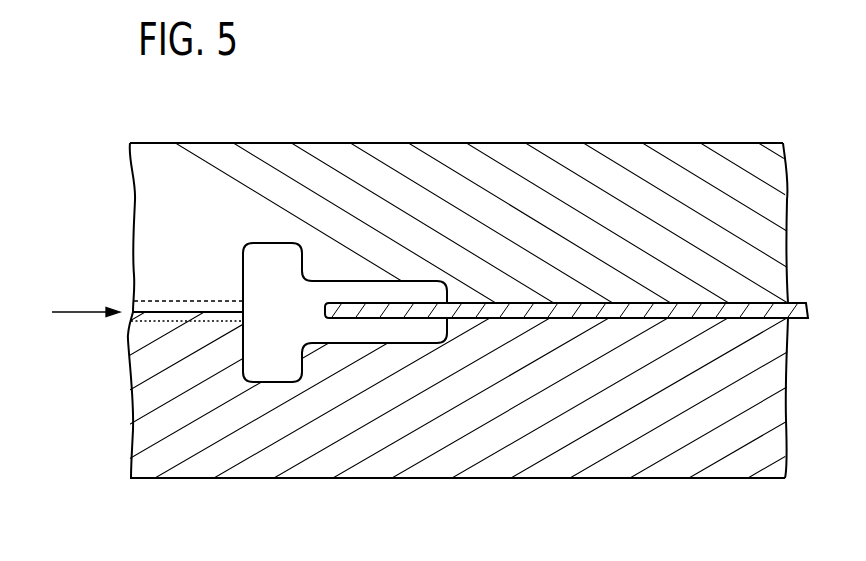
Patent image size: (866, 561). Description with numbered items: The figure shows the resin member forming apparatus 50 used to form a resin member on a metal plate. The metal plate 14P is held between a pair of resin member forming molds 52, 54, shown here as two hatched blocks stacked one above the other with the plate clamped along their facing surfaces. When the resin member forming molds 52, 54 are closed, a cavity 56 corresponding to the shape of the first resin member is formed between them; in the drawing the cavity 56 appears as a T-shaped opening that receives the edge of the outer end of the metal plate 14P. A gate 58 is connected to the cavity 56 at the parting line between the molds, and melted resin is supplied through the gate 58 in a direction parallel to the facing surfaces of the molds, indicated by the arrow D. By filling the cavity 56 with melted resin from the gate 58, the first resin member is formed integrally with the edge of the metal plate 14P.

The resin member forming apparatus 50 is at (604, 75).
The resin member forming mold 52 is at (684, 478).
The resin member forming mold 54 is at (684, 143).
The cavity 56 is at (274, 262).
The gate 58 is at (160, 300).
The metal plate 14P is at (797, 303).
The arrow D is at (77, 313).